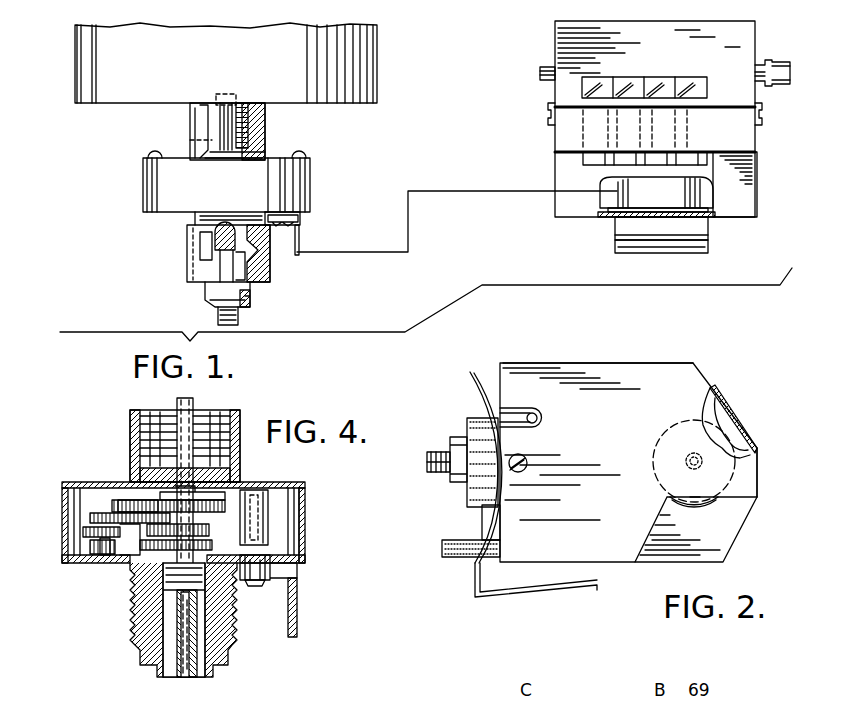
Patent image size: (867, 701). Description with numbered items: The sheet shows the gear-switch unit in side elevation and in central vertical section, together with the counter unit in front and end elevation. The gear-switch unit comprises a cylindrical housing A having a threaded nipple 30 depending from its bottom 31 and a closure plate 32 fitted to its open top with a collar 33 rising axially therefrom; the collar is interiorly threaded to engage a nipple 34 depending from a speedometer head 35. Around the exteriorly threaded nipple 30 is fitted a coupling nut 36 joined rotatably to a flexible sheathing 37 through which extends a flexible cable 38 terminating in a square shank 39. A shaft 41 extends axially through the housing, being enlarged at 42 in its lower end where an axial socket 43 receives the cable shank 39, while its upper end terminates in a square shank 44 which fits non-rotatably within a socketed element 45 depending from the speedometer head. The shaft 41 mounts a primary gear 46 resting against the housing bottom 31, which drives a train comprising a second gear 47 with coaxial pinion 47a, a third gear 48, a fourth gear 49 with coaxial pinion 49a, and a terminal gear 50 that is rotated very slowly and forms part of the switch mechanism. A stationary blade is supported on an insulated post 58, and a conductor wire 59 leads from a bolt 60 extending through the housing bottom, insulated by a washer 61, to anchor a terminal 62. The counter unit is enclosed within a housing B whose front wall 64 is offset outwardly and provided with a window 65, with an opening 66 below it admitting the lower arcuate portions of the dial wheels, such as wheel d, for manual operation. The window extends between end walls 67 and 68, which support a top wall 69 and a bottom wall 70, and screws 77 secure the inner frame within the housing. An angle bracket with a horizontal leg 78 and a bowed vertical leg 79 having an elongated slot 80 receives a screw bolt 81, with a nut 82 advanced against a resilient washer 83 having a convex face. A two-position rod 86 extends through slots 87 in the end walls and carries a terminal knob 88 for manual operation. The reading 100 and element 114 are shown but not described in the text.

In FIG. 1, the cylindrical housing A is at (140, 200).
In FIG. 4, the cylindrical housing A is at (309, 525).
In FIG. 1, the housing B is at (653, 13).
In FIG. 2, the housing B is at (610, 357).
In FIG. 1, the threaded nipple 30 is at (262, 250).
In FIG. 4, the threaded nipple 30 is at (135, 625).
In FIG. 4, the housing bottom 31 is at (121, 570).
In FIG. 4, the closure plate 32 is at (281, 482).
In FIG. 1, the collar 33 is at (192, 131).
In FIG. 4, the collar 33 is at (130, 429).
In FIG. 1, the nipple 34 is at (254, 103).
In FIG. 1, the speedometer head 35 is at (352, 103).
In FIG. 1, the coupling nut 36 is at (187, 243).
In FIG. 1, the flexible sheathing 37 is at (250, 297).
In FIG. 1, the flexible cable 38 is at (240, 318).
In FIG. 1, the shank 39 is at (220, 250).
In FIG. 4, the shaft 41 is at (193, 532).
In FIG. 4, the enlarged end portion 42 is at (200, 632).
In FIG. 4, the axial socket 43 is at (190, 672).
In FIG. 1, the shank 44 is at (265, 125).
In FIG. 4, the shank 44 is at (193, 405).
In FIG. 1, the socketed element 45 is at (222, 100).
In FIG. 4, the primary gear 46 is at (202, 546).
In FIG. 4, the second gear 47 is at (110, 566).
In FIG. 4, the pinion 47a is at (90, 557).
In FIG. 4, the third gear 48 is at (90, 532).
In FIG. 4, the fourth gear 49 is at (95, 500).
In FIG. 4, the pinion 49a is at (118, 500).
In FIG. 4, the terminal gear 50 is at (215, 500).
In FIG. 4, the insulated post 58 is at (270, 510).
In FIG. 1, the conductor wire 59 is at (408, 236).
In FIG. 2, the conductor wire 59 is at (442, 551).
In FIG. 1, the bolt 60 is at (292, 220).
In FIG. 4, the bolt 60 is at (256, 586).
In FIG. 1, the washer 61 is at (290, 210).
In FIG. 4, the washer 61 is at (275, 568).
In FIG. 4, the terminal 62 is at (297, 606).
In FIG. 1, the front wall 64 is at (556, 149).
In FIG. 2, the front wall 64 is at (757, 476).
In FIG. 1, the window 65 is at (677, 77).
In FIG. 2, the window 65 is at (735, 435).
In FIG. 1, the opening 66 is at (585, 160).
In FIG. 1, the end wall 67 is at (757, 181).
In FIG. 1, the end wall 68 is at (555, 42).
In FIG. 2, the end wall 68 is at (677, 363).
In FIG. 2, the top wall 69 is at (540, 363).
In FIG. 1, the bottom wall 70 is at (608, 218).
In FIG. 2, the bottom wall 70 is at (635, 562).
In FIG. 1, the screws 77 is at (548, 121).
In FIG. 2, the screws 77 is at (528, 463).
In FIG. 1, the horizontal leg 78 is at (705, 250).
In FIG. 2, the horizontal leg 78 is at (549, 590).
In FIG. 1, the bowed vertical leg 79 is at (705, 229).
In FIG. 2, the bowed vertical leg 79 is at (475, 565).
In FIG. 2, the elongated vertical slot 80 is at (480, 399).
In FIG. 2, the screw bolt 81 is at (427, 461).
In FIG. 2, the nut 82 is at (458, 437).
In FIG. 2, the resilient washer 83 is at (498, 482).
In FIG. 1, the two-position rod 86 is at (540, 73).
In FIG. 2, the two-position rod 86 is at (538, 418).
In FIG. 2, the slots 87 is at (531, 408).
In FIG. 1, the terminal knob 88 is at (776, 60).
In FIG. 1, the counter reading 100 is at (656, 194).
In FIG. 2, the counter wheel 114 is at (705, 505).
In FIG. 2, the dial wheel d is at (696, 510).